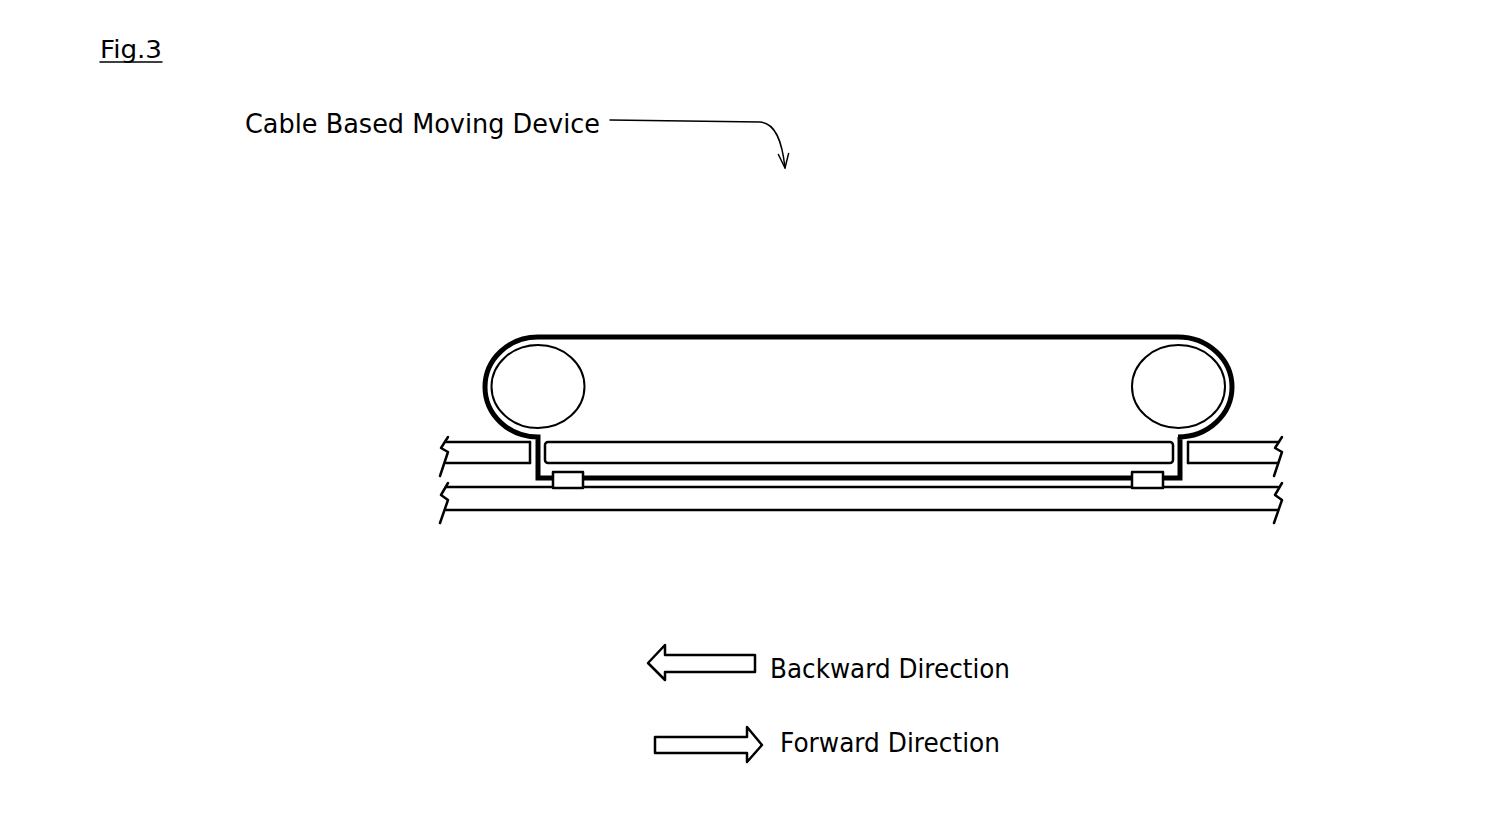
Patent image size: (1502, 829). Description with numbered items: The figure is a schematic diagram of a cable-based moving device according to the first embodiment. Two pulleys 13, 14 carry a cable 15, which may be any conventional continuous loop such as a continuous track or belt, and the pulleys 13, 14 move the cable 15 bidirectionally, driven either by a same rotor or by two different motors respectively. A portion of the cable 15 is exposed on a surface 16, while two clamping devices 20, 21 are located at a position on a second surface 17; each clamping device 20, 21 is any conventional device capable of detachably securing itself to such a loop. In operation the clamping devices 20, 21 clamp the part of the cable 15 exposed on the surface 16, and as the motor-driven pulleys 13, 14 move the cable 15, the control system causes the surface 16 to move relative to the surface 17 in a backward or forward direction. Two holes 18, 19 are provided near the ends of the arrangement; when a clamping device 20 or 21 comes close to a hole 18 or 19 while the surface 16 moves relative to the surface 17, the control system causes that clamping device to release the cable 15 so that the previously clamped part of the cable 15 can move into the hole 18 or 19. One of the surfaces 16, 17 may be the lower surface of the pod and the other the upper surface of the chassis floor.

The pulley 13 is at (533, 387).
The pulley 14 is at (1178, 380).
The cable 15 is at (829, 333).
The surface 16 is at (440, 450).
The surface 17 is at (1285, 483).
The hole 18 is at (533, 472).
The hole 19 is at (1192, 468).
The clamping device 20 is at (567, 475).
The clamping device 21 is at (1147, 480).